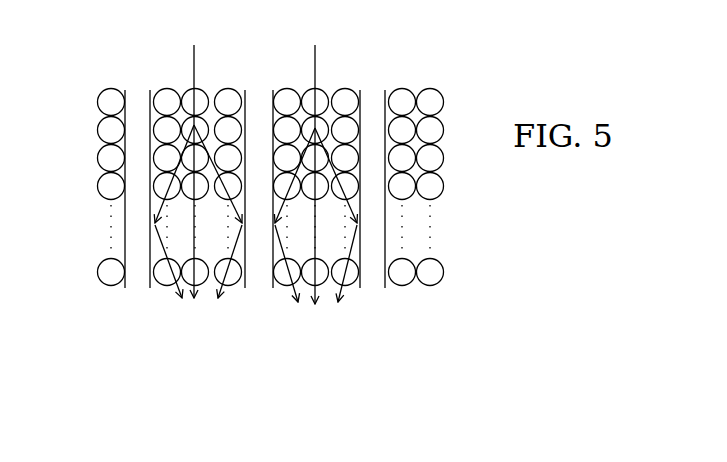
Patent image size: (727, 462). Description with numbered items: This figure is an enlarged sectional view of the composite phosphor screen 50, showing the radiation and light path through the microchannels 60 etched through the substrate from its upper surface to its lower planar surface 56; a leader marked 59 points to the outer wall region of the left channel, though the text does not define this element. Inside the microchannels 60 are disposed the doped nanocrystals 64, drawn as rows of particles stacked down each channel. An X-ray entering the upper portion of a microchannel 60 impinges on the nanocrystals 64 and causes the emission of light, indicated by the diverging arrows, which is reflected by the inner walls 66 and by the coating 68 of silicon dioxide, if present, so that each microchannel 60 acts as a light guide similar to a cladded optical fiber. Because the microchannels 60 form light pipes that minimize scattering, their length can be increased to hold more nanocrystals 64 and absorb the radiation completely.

The composite phosphor screen 50 is at (372, 97).
The lower planar surface 56 is at (137, 287).
The substrate wall 59 is at (132, 97).
The microchannels 60 is at (287, 98).
The doped nanocrystals 64 is at (400, 100).
The inner walls 66 is at (385, 228).
The coating 68 is at (256, 101).